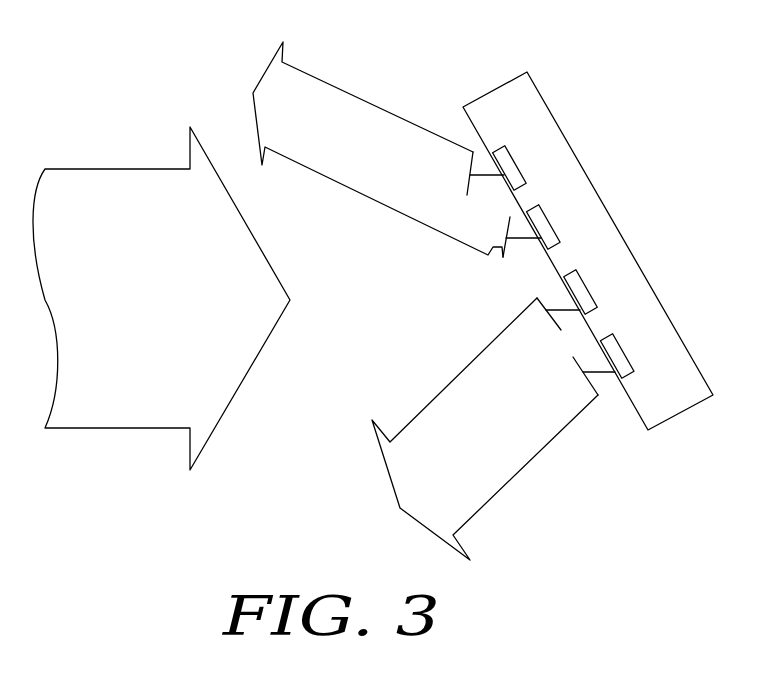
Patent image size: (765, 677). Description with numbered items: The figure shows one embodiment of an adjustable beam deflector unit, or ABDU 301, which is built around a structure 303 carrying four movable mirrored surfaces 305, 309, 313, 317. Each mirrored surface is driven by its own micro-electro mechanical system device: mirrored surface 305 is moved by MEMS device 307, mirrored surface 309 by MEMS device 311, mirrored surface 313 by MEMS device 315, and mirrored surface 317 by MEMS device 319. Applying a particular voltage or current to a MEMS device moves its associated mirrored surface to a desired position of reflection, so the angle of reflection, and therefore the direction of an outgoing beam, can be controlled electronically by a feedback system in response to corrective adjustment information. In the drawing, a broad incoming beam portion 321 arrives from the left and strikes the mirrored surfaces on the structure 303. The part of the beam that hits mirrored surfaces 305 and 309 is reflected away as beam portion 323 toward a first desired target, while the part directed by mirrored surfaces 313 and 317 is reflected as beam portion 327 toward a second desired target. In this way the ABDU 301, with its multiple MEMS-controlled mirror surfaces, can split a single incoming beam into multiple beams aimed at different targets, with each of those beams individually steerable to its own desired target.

The adjustable beam deflector unit 301 is at (588, 221).
The structure 303 is at (569, 150).
The movable mirrored surface 305 is at (468, 183).
The MEMS device 307 is at (515, 163).
The movable mirrored surface 309 is at (493, 252).
The MEMS device 311 is at (554, 230).
The movable mirrored surface 313 is at (558, 327).
The MEMS device 315 is at (587, 292).
The movable mirrored surface 317 is at (579, 367).
The MEMS device 319 is at (621, 347).
The incoming beam portion 321 is at (166, 314).
The beam portion 323 is at (352, 143).
The beam portion 327 is at (496, 446).